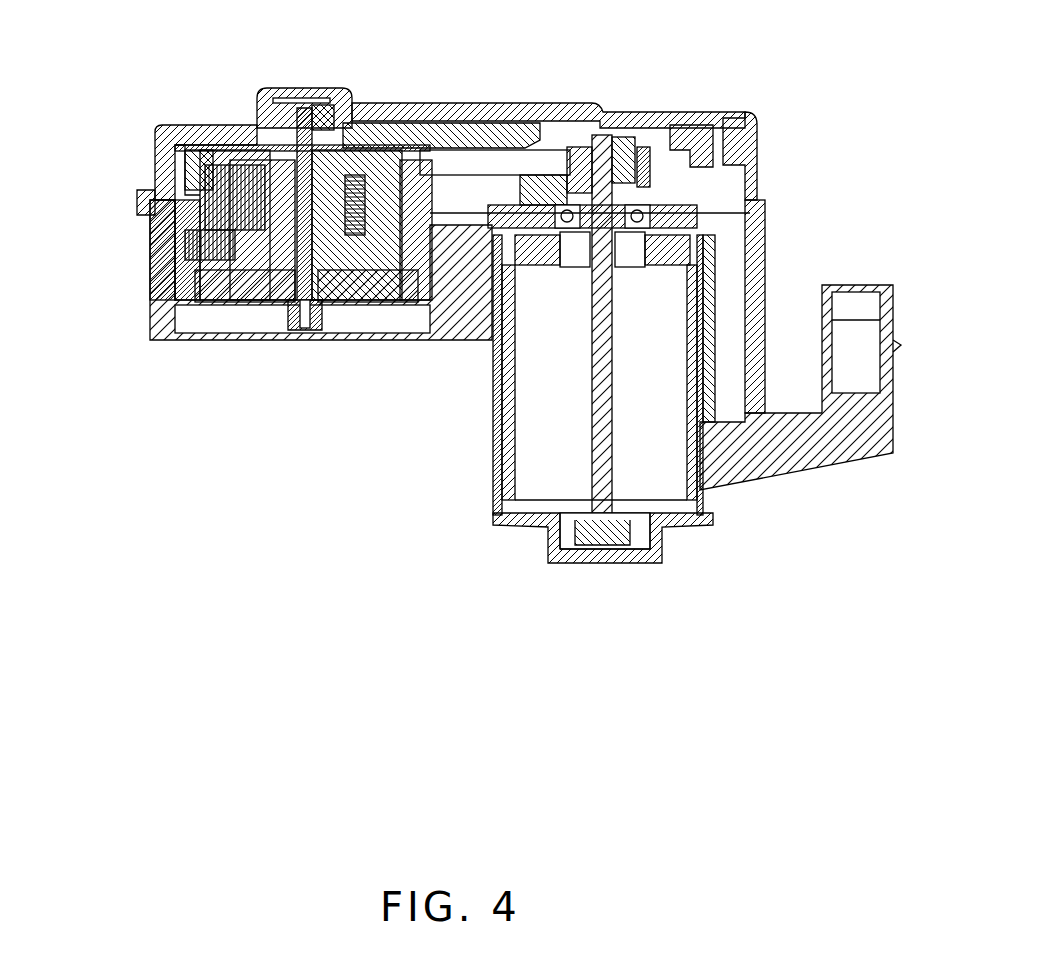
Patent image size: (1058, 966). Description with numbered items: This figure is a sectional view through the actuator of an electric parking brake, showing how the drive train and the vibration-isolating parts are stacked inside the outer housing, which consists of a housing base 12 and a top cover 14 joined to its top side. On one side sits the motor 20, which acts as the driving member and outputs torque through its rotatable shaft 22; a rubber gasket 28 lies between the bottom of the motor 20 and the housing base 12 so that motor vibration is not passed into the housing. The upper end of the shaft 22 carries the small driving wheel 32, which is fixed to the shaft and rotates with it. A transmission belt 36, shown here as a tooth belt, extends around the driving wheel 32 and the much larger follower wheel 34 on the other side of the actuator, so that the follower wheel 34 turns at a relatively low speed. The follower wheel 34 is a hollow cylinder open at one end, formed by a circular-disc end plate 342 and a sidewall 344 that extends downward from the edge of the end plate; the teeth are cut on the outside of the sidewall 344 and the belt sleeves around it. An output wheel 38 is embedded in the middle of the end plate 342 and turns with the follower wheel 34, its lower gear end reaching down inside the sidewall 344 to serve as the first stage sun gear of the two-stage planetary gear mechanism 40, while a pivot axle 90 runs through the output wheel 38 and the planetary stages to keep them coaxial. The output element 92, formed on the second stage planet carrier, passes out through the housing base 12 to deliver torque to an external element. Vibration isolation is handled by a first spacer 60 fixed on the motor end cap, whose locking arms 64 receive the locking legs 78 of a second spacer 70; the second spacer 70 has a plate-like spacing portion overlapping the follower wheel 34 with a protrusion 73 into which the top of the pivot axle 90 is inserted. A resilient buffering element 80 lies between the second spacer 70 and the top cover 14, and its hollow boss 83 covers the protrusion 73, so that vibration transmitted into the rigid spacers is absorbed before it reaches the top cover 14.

The housing base 12 is at (680, 535).
The top cover 14 is at (757, 145).
The motor 20 is at (530, 410).
The shaft 22 is at (600, 565).
The gasket 28 is at (640, 565).
The driving wheel 32 is at (615, 150).
The follower wheel 34 is at (118, 55).
The end plate 342 is at (212, 147).
The sidewall 344 is at (192, 175).
The transmission belt 36 is at (540, 170).
The output wheel 38 is at (355, 118).
The planetary gear mechanism 40 is at (218, 318).
The first spacer 60 is at (700, 207).
The locking arms 64 is at (650, 170).
The second spacer 70 is at (470, 128).
The protrusion 73 is at (312, 105).
The locking legs 78 is at (700, 150).
The buffering element 80 is at (447, 105).
The hollow boss 83 is at (257, 105).
The pivot axle 90 is at (283, 90).
The output element 92 is at (320, 318).